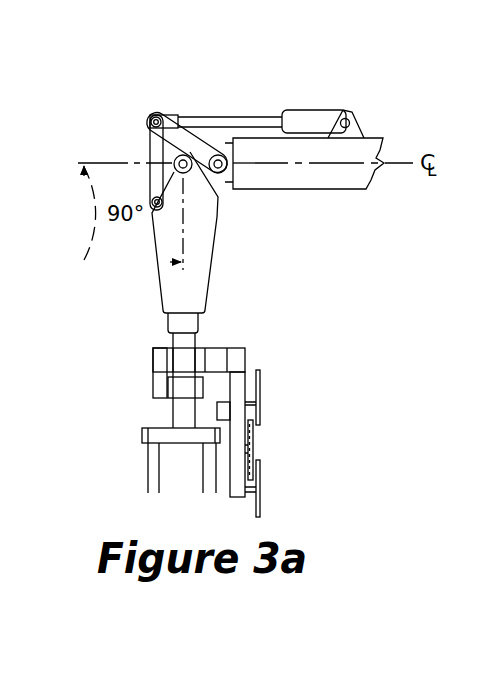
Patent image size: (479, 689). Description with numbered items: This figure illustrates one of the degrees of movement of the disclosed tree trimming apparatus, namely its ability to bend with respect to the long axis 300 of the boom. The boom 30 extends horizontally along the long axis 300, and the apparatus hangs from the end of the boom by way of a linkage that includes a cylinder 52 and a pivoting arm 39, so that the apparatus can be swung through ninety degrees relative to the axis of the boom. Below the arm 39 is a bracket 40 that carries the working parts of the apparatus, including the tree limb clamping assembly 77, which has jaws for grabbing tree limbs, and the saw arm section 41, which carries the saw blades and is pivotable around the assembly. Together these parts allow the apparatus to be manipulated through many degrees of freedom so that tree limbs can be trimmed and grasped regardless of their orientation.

The hydraulic cylinder 52 is at (313, 110).
The long axis of the boom 300 is at (390, 162).
The boom 30 is at (310, 190).
The pivot arm 39 is at (216, 237).
The mounting bracket 40 is at (220, 333).
The saw arm section 41 is at (259, 438).
The tree limb clamping assembly 77 is at (139, 464).